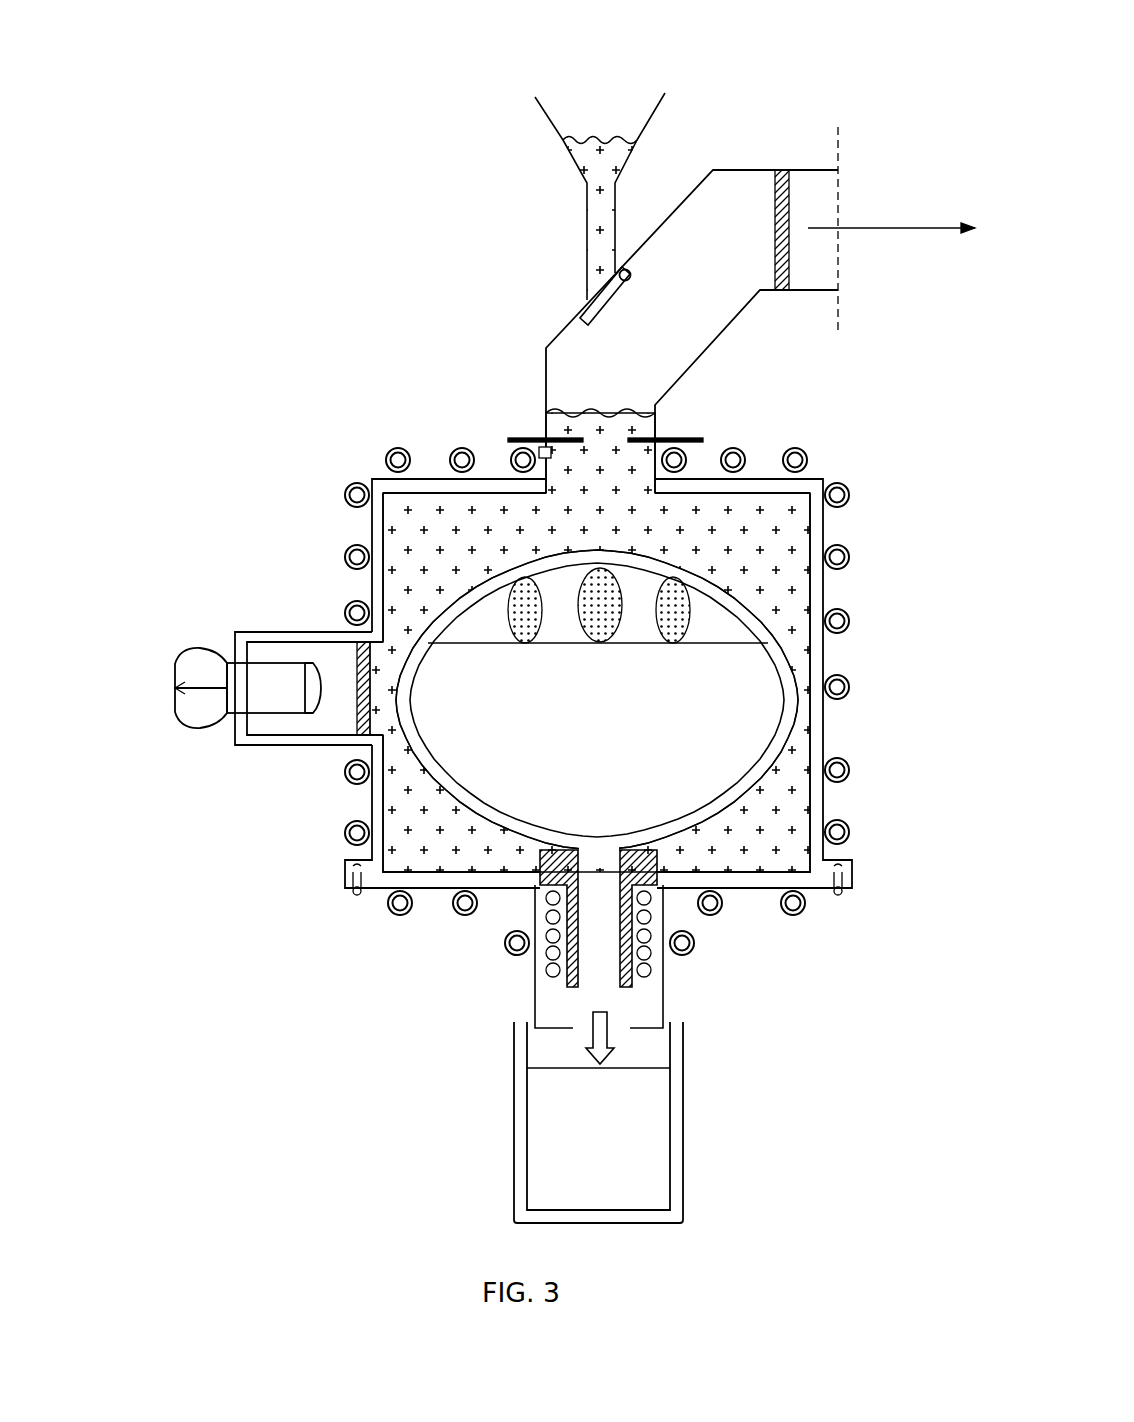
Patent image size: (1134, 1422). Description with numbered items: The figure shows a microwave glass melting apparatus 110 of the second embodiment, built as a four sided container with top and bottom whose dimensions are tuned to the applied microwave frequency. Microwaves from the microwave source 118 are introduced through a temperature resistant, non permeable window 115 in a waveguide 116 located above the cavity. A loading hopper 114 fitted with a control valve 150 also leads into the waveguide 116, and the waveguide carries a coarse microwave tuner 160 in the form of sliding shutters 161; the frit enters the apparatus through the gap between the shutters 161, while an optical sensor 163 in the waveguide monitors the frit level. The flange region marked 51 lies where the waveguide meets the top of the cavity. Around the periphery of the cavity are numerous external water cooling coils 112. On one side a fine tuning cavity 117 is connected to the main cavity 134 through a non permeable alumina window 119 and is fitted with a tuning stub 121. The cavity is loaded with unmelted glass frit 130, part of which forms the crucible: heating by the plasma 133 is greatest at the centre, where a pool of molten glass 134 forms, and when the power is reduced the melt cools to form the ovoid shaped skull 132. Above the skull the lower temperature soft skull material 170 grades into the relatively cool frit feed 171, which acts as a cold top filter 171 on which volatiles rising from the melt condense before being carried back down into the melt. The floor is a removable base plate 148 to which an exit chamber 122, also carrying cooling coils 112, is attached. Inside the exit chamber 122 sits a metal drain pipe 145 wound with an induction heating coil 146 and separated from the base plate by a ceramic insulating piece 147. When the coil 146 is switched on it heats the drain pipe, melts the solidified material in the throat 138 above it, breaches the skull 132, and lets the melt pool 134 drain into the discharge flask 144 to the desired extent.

The duct junction 51 is at (655, 438).
The apparatus 110 is at (830, 657).
The external water cooling coils 112 is at (807, 453).
The loading hopper 114 is at (608, 123).
The non permeable window 115 is at (778, 170).
The waveguide 116 is at (718, 336).
The fine tuning cavity 117 is at (283, 632).
The microwave source 118 is at (891, 228).
The alumina window 119 is at (355, 655).
The tuning stub 121 is at (197, 648).
The exit chamber 122 is at (535, 1003).
The unmelted glass frit 130 is at (800, 530).
The skull 132 is at (790, 733).
The plasma 133 is at (692, 611).
The main cavity / melt pool 134 is at (725, 762).
The throat 138 is at (598, 896).
The discharge flask 144 is at (683, 1170).
The metal drain pipe 145 is at (563, 981).
The induction heating coil 146 is at (645, 975).
The ceramic insulating piece 147 is at (650, 878).
The removable base plate 148 is at (433, 890).
The control valve 150 is at (587, 283).
The coarse microwave tuner 160 is at (523, 418).
The sliding shutters 161 is at (507, 440).
The optical sensor 163 is at (527, 440).
The soft skull material 170 is at (570, 560).
The cold top filter / frit feed 171 is at (596, 497).